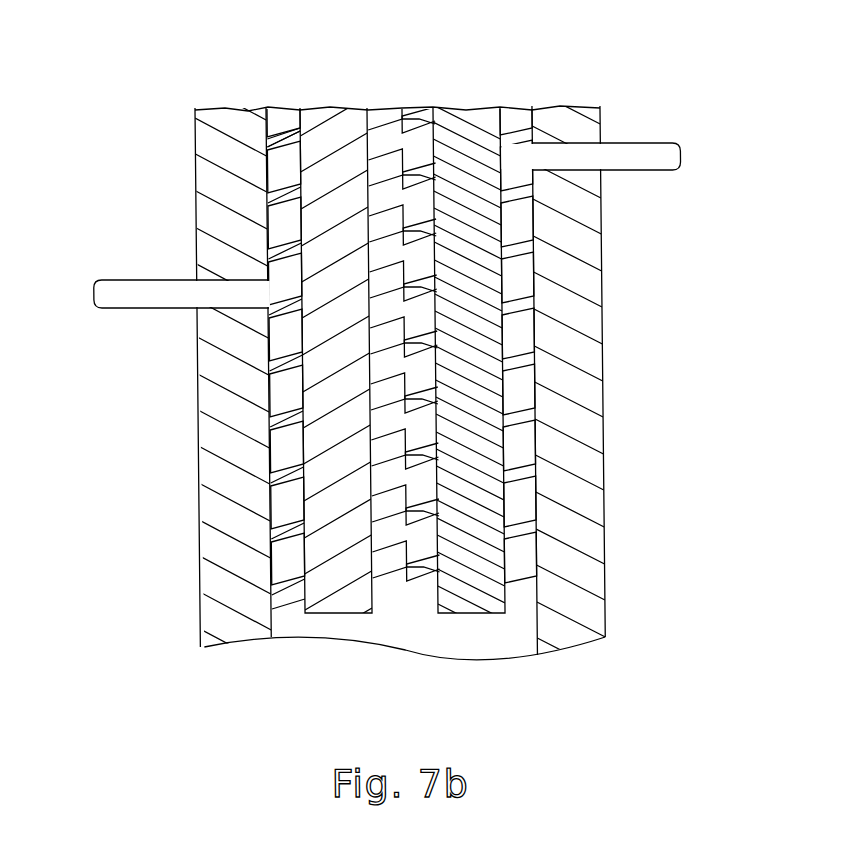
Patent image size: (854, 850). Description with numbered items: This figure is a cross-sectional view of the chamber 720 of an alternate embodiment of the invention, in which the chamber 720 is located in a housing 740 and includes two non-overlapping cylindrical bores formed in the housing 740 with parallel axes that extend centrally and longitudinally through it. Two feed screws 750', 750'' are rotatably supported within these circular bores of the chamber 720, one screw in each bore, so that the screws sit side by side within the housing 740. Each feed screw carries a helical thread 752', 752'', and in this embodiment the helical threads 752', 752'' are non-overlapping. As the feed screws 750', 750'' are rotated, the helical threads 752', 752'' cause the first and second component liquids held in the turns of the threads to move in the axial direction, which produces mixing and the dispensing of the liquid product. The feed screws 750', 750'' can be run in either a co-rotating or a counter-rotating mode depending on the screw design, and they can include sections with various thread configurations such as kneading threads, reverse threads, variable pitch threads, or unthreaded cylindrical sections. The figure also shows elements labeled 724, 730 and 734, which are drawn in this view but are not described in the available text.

The housing 740 is at (237, 489).
The substrate 724 is at (403, 630).
The chamber 720 is at (282, 462).
The helical thread 752' is at (238, 107).
The helical thread 752'' is at (588, 333).
The feed screw 750' is at (290, 337).
The feed screw 750'' is at (494, 347).
The first lead 730 is at (150, 290).
The second lead 734 is at (638, 153).